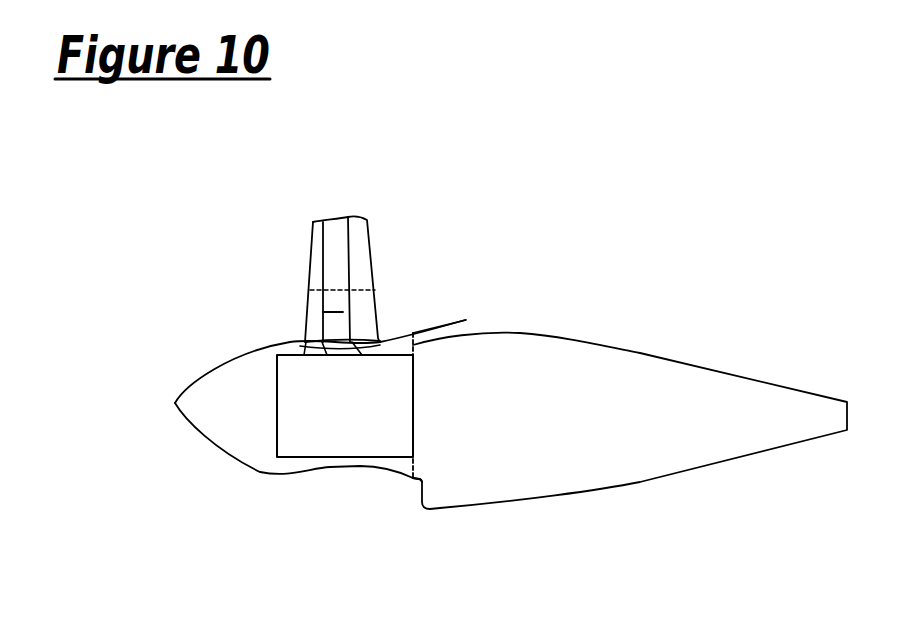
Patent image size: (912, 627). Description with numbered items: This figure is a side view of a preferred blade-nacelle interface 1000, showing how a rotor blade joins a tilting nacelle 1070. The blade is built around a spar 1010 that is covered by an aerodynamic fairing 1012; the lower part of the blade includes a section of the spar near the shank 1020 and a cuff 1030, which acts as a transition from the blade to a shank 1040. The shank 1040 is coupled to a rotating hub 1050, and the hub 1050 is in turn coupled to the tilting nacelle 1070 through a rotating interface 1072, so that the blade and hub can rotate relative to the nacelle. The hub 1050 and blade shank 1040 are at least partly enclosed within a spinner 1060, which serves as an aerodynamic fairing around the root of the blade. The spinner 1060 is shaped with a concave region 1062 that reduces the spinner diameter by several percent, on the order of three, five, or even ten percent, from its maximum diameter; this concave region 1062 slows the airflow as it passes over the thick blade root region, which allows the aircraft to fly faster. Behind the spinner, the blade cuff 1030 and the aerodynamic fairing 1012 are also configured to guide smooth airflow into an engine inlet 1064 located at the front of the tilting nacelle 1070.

The blade-nacelle interface 1000 is at (588, 196).
The spar 1010 is at (323, 258).
The aerodynamic fairing 1012 is at (373, 240).
The section of the spar near the shank 1020 is at (335, 307).
The cuff 1030 is at (325, 352).
The shank 1040 is at (315, 350).
The rotating hub 1050 is at (277, 427).
The spinner 1060 is at (200, 372).
The concave region 1062 is at (333, 486).
The engine inlet 1064 is at (406, 498).
The tilting nacelle 1070 is at (593, 340).
The rotating interface 1072 is at (470, 324).